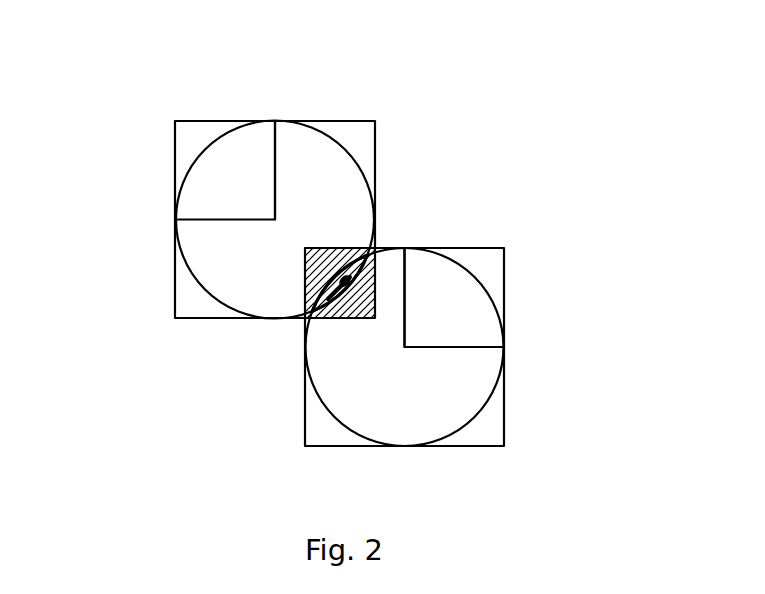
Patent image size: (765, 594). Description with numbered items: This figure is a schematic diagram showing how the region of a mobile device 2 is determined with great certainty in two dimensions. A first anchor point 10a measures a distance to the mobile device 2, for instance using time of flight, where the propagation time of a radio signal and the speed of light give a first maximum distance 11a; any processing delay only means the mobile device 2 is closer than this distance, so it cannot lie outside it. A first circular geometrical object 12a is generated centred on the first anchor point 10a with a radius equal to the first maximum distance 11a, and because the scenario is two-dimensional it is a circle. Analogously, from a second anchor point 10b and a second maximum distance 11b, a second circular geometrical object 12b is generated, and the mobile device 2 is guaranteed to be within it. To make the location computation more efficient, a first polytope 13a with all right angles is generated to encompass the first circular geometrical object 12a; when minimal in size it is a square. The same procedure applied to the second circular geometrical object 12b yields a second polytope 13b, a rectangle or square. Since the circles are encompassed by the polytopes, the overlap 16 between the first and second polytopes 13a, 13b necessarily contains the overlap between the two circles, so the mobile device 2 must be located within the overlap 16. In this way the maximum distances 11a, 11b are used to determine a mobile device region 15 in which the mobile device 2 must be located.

The mobile device 2 is at (378, 243).
The first anchor point 10a is at (273, 218).
The second anchor point 10b is at (404, 347).
The first maximum distance 11a is at (273, 183).
The second maximum distance 11b is at (405, 297).
The first circular geometrical object 12a is at (353, 160).
The second circular geometrical object 12b is at (477, 280).
The first polytope 13a is at (202, 318).
The second polytope 13b is at (505, 422).
The mobile device region 15 is at (360, 300).
The overlap 16 is at (360, 300).